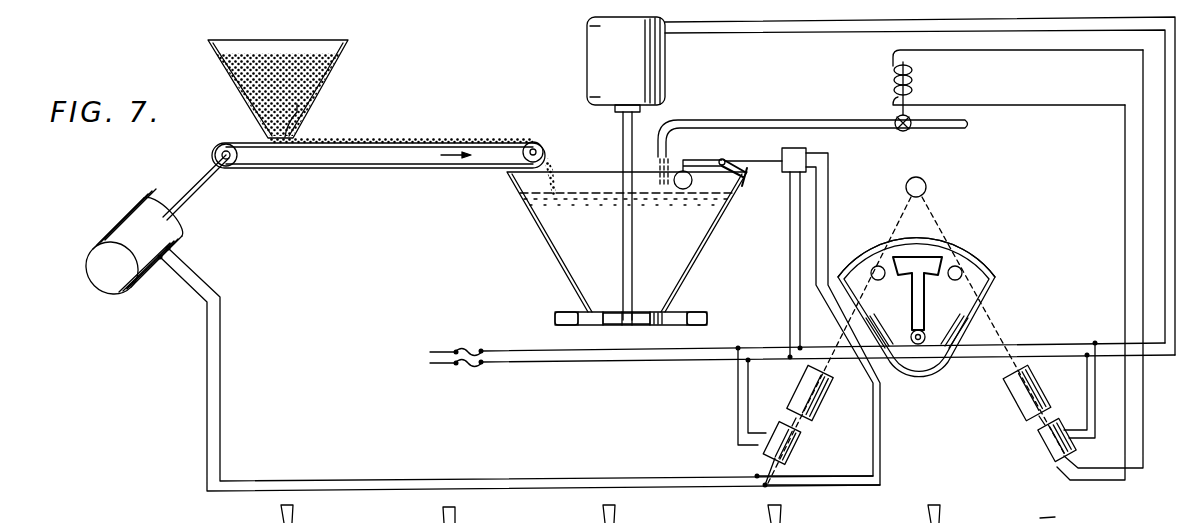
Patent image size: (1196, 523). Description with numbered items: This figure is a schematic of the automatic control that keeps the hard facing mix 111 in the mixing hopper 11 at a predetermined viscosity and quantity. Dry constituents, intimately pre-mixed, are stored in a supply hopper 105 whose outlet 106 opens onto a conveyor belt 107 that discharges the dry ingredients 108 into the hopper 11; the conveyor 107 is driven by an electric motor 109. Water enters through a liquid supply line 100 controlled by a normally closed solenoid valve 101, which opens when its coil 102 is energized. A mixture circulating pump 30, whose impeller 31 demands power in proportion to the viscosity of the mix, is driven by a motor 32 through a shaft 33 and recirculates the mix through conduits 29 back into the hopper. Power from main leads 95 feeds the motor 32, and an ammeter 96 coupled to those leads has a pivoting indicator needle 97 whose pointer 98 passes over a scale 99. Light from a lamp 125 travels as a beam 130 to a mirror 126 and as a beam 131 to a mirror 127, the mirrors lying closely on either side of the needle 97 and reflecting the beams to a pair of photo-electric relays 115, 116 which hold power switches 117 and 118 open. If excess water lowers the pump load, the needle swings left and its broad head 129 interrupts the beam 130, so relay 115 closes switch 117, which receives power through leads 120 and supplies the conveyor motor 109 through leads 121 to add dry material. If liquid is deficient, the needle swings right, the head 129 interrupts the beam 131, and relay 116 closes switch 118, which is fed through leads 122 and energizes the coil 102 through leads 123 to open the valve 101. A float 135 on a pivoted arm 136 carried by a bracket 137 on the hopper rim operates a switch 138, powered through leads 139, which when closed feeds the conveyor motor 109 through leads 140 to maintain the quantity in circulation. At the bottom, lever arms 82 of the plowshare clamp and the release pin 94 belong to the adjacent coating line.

The supply hopper 105 is at (322, 64).
The outlet 106 is at (297, 112).
The conveyor belt 107 is at (413, 139).
The dry ingredients 108 is at (490, 142).
The electric motor 109 is at (192, 212).
The motor 32 is at (640, 53).
The agitator shaft 33 is at (623, 141).
The hopper 11 is at (700, 247).
The hard facing mix 111 is at (698, 225).
The conduits 29 is at (560, 308).
The mixture circulating pump 30 is at (655, 324).
The pump impeller 31 is at (616, 322).
The liquid supply line 100 is at (810, 121).
The solenoid valve 101 is at (905, 131).
The coil 102 is at (913, 80).
The float 135 is at (695, 178).
The arm 136 is at (696, 160).
The bracket 137 is at (726, 159).
The switch 138 is at (809, 148).
The leads 139 is at (779, 322).
The leads 140 is at (832, 176).
The main leads 95 is at (553, 352).
The ammeter 96 is at (939, 375).
The indicator needle 97 is at (922, 316).
The pointer 98 is at (918, 246).
The scale 99 is at (963, 246).
The lamp 125 is at (927, 186).
The mirror 126 is at (876, 266).
The mirror 127 is at (963, 273).
The broad head 129 is at (905, 278).
The light beam 130 is at (907, 215).
The light beam 131 is at (932, 215).
The photo-electric relay 115 is at (820, 397).
The power switch 117 is at (787, 454).
The photo-electric relay 116 is at (1037, 392).
The power switch 118 is at (1045, 455).
The leads 120 is at (729, 397).
The leads 121 is at (508, 487).
The leads 122 is at (1096, 403).
The leads 123 is at (1133, 418).
The lever arms 82 is at (942, 505).
The release pin 94 is at (1051, 506).